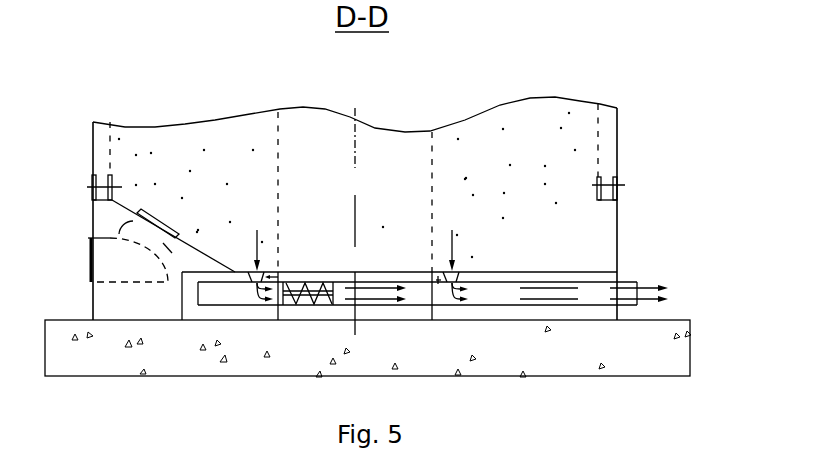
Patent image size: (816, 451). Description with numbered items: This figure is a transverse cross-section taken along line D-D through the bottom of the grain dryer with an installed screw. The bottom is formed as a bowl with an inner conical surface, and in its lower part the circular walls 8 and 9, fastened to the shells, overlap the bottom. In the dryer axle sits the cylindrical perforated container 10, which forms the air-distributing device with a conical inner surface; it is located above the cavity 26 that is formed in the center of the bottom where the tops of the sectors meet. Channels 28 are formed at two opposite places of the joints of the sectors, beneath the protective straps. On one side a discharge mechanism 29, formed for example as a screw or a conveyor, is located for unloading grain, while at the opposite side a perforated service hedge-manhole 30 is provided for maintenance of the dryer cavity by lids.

The circular wall 8 is at (391, 184).
The circular wall 9 is at (564, 190).
The cylindrical perforated container 10 is at (355, 159).
The cavity 26 is at (478, 272).
The channels 28 is at (368, 342).
The discharge mechanism 29 is at (448, 254).
The perforated service hedge-manhole 30 is at (111, 216).